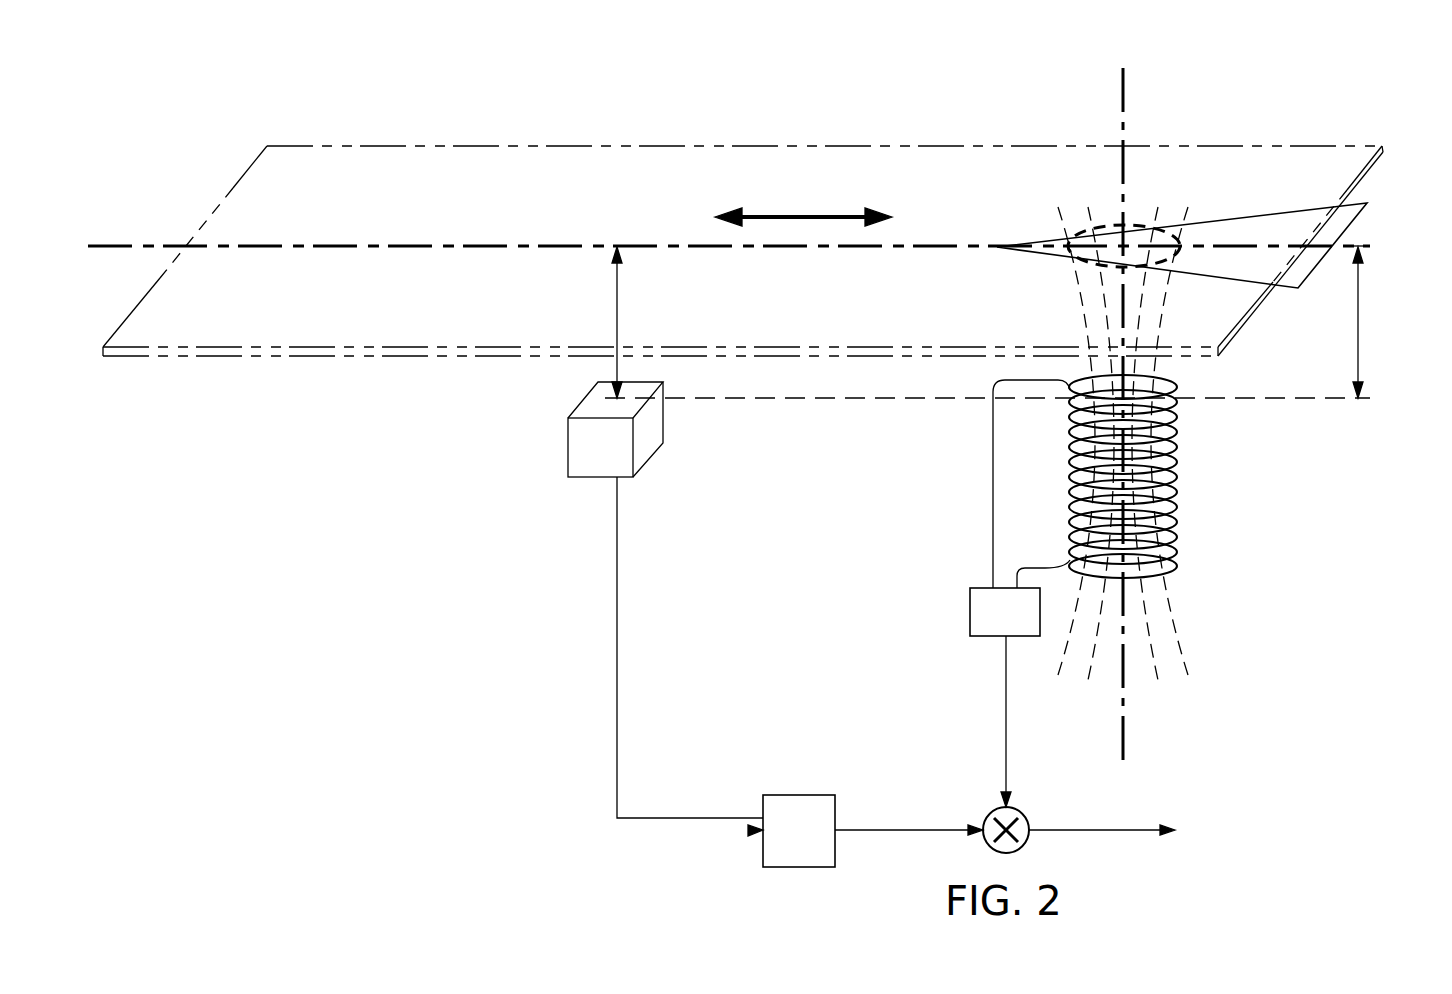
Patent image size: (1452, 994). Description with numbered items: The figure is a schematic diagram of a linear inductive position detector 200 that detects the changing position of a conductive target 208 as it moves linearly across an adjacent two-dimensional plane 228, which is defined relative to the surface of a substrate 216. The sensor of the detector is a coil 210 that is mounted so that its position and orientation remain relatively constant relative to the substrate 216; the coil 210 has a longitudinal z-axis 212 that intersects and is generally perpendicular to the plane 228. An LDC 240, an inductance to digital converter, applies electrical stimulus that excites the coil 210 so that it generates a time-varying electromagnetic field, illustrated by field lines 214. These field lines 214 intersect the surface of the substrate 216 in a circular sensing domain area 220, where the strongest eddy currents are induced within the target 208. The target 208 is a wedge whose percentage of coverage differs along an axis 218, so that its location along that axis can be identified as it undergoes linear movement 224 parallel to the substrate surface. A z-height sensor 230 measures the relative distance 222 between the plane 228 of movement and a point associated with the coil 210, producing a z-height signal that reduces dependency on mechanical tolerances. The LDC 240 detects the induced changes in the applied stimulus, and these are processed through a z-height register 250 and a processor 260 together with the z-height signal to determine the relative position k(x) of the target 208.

The inductive position detector 200 is at (596, 80).
The target 208 is at (1245, 210).
The coil 210 is at (1160, 580).
The z-axis 212 is at (1130, 84).
The field lines 214 is at (1075, 300).
The substrate 216 is at (500, 145).
The axis 218 is at (100, 246).
The sensing domain area 220 is at (1098, 224).
The relative distance 222 is at (1365, 308).
The linear movement 224 is at (798, 225).
The two-dimensional plane 228 is at (980, 128).
The z-height sensor 230 is at (568, 455).
The LDC 240 is at (970, 612).
The z-height register 250 is at (795, 868).
The processor 260 is at (1025, 815).